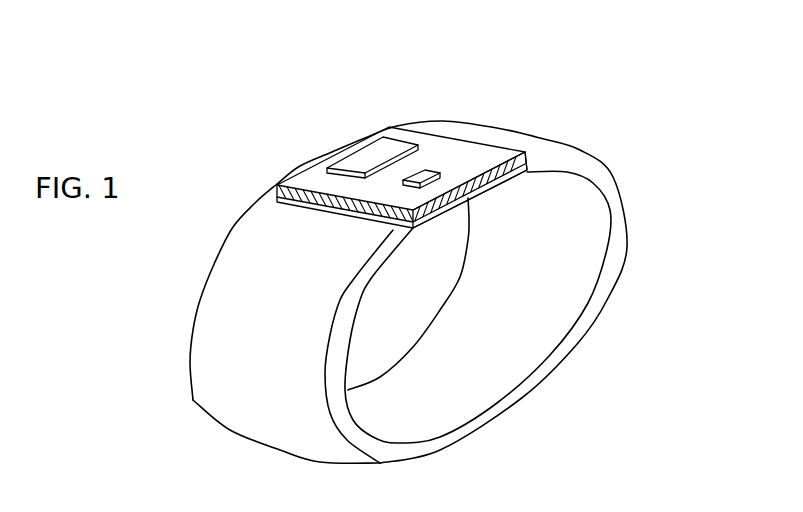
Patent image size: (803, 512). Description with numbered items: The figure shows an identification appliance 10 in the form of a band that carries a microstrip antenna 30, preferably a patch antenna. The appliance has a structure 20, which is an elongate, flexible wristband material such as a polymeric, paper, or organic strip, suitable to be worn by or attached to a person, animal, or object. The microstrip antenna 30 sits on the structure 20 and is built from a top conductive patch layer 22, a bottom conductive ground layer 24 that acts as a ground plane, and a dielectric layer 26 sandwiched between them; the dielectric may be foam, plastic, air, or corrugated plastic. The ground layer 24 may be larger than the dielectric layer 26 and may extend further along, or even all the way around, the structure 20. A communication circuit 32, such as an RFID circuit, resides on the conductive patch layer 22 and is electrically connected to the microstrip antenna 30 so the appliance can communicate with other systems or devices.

The identification appliance 10 is at (430, 237).
The structure 20 is at (578, 343).
The conductive patch layer 22 is at (367, 162).
The conductive ground layer 24 is at (443, 212).
The dielectric layer 26 is at (523, 153).
The microstrip antenna 30 is at (465, 72).
The communication circuit 32 is at (435, 169).